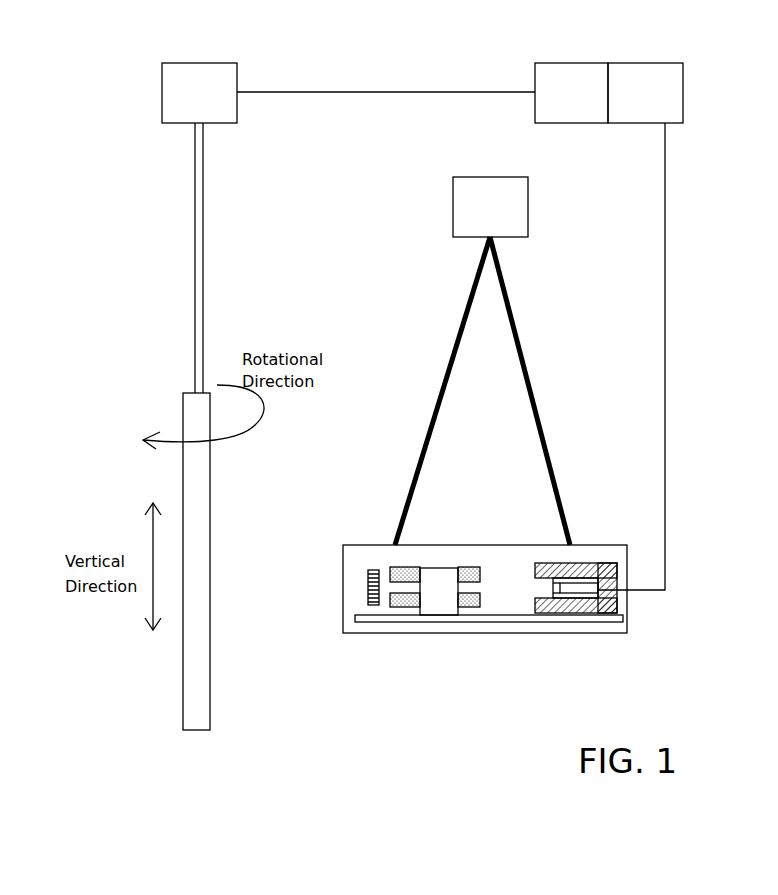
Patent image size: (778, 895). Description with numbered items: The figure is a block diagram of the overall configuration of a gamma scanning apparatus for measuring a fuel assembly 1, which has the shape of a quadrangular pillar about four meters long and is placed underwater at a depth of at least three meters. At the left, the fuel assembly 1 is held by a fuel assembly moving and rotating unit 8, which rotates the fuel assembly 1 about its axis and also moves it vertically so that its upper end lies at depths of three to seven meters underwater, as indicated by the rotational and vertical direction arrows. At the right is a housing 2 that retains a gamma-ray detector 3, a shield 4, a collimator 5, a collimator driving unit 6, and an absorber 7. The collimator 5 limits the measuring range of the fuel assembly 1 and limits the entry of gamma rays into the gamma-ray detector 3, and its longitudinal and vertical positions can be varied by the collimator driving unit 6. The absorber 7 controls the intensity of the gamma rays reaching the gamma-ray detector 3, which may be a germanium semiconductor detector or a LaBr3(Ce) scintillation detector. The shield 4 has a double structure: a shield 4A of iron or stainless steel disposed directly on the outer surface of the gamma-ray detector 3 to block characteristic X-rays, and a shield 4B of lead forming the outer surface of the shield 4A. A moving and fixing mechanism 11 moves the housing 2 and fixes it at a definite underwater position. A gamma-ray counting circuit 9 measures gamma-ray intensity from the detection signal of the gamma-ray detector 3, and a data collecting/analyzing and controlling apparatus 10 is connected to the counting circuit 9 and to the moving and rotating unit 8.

The fuel assembly 1 is at (200, 697).
The housing 2 is at (432, 545).
The gamma-ray detector 3 is at (585, 545).
The shield 4 is at (561, 586).
The shield 4A is at (590, 600).
The shield 4B is at (547, 613).
The collimator 5 is at (412, 545).
The collimator driving unit 6 is at (443, 595).
The absorber 7 is at (378, 545).
The fuel assembly moving and rotating unit 8 is at (208, 105).
The gamma-ray counting circuit 9 is at (658, 100).
The data collecting/analyzing and controlling apparatus 10 is at (560, 85).
The moving and fixing mechanism 11 is at (480, 210).